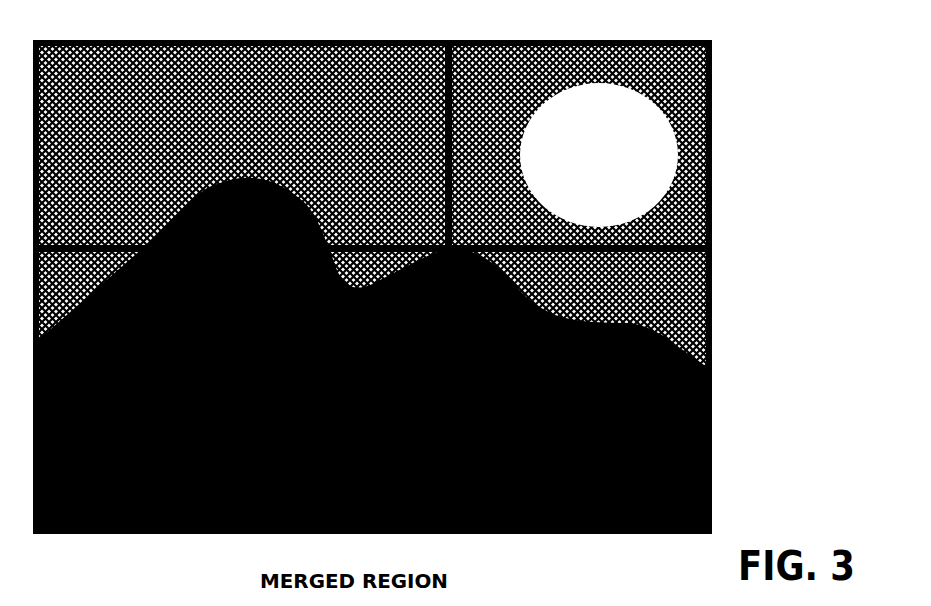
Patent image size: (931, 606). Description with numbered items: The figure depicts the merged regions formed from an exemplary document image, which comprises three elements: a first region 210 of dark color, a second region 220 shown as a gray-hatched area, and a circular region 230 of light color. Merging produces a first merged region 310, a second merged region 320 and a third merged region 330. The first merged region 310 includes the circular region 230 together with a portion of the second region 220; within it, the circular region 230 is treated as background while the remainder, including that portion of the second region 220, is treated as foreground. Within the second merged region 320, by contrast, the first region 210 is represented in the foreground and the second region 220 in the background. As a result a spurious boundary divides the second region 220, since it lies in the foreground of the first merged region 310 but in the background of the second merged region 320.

The first region 210 is at (533, 305).
The second region 220 is at (673, 230).
The circular region 230 is at (653, 160).
The first merged region 310 is at (715, 63).
The second merged region 320 is at (352, 40).
The third merged region 330 is at (715, 410).